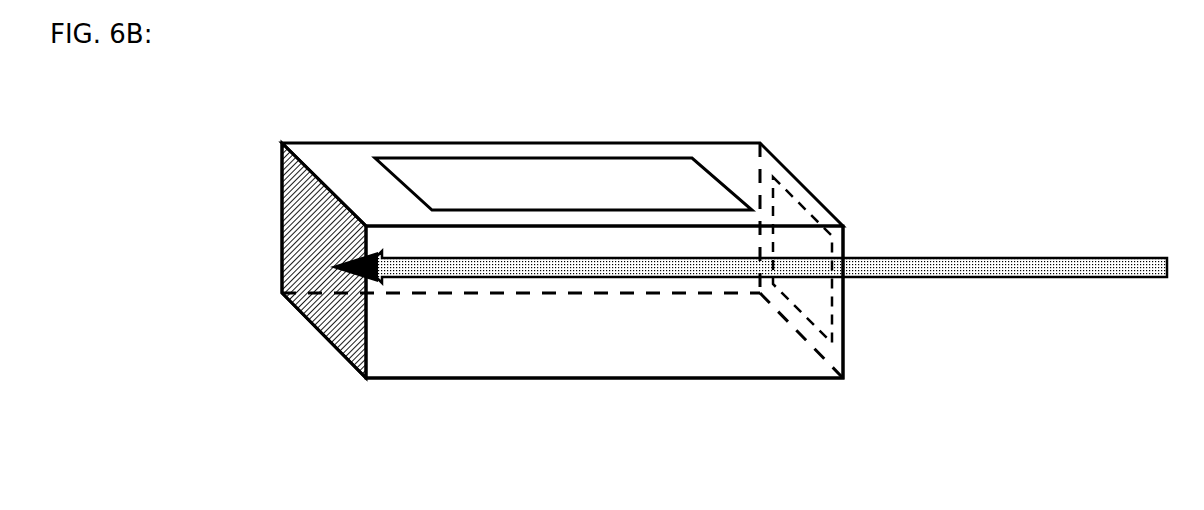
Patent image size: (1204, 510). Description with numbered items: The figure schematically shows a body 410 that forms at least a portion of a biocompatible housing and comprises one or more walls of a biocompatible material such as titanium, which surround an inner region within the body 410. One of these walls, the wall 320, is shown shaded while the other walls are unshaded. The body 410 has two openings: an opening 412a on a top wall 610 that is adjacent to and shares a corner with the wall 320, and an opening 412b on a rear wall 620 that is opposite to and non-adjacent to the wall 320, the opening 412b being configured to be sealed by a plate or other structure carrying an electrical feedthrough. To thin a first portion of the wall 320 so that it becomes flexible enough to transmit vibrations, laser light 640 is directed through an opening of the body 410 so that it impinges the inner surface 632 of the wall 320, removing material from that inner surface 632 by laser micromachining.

The body 410 is at (712, 380).
The opening 412a is at (608, 186).
The opening 412b is at (800, 242).
The wall 320 is at (328, 323).
The wall 610 is at (362, 158).
The wall 620 is at (800, 180).
The inner surface 632 is at (352, 240).
The laser light 640 is at (1112, 257).